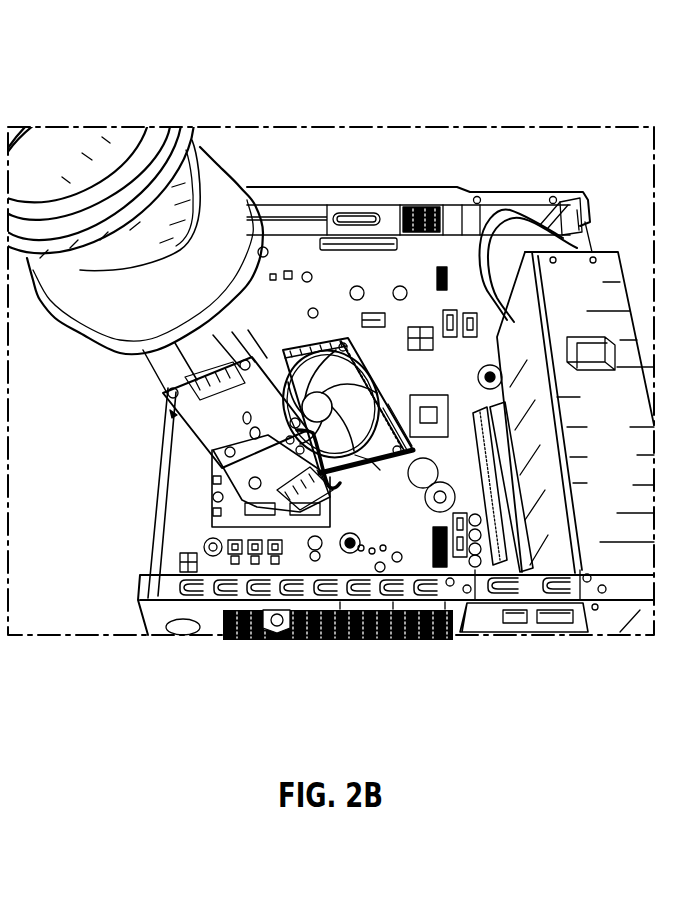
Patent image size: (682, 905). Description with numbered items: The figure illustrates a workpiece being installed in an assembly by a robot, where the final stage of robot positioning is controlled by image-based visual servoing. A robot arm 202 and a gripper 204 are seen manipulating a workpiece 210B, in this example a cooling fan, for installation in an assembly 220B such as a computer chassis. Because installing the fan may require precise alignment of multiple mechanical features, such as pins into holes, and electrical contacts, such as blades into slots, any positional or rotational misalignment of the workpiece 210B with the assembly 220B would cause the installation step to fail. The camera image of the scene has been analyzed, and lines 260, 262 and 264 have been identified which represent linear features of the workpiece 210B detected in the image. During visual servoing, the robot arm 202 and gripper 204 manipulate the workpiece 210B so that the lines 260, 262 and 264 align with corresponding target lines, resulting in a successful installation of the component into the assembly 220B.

The robot arm 202 is at (60, 143).
The gripper 204 is at (222, 410).
The line 260 is at (336, 340).
The line 262 is at (377, 410).
The line 264 is at (380, 447).
The assembly 220B is at (420, 187).
The workpiece 210B is at (340, 530).